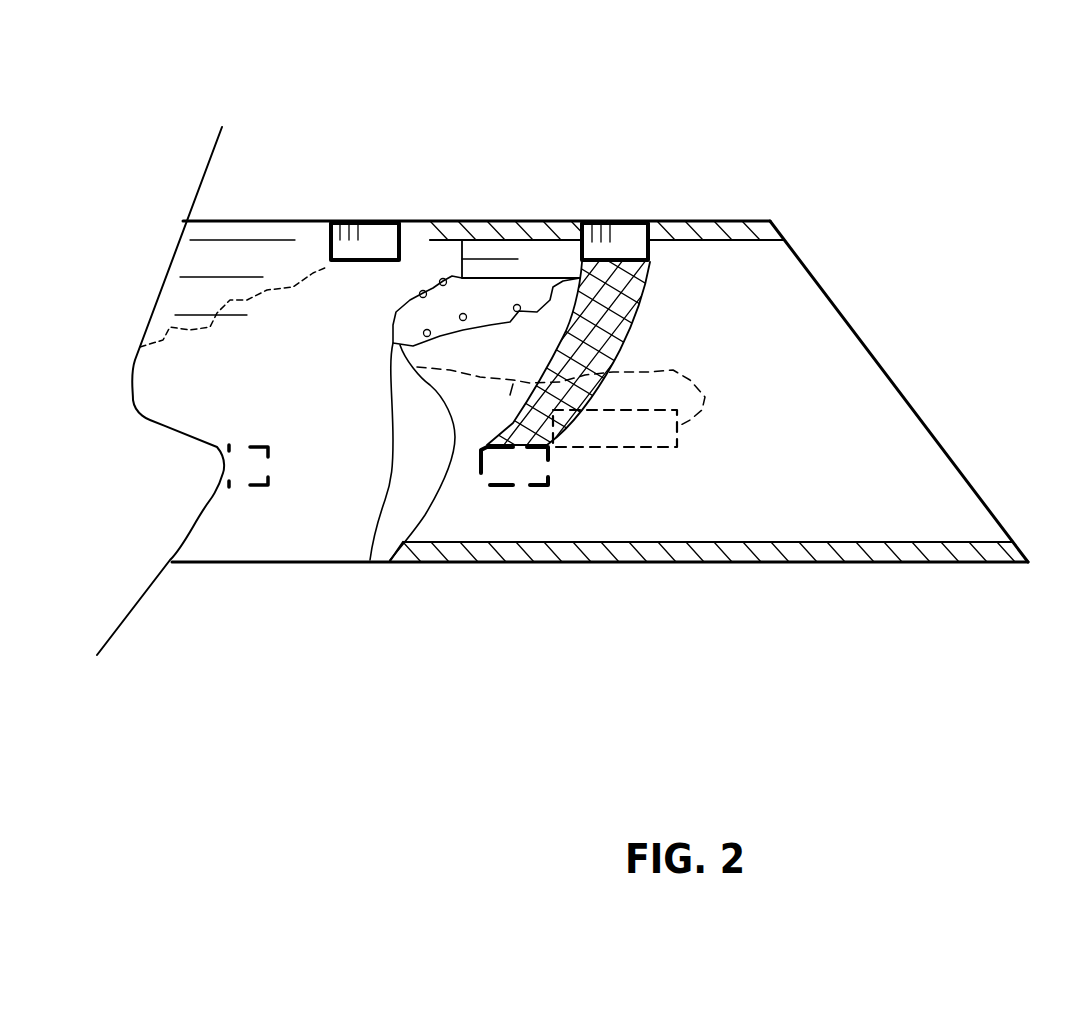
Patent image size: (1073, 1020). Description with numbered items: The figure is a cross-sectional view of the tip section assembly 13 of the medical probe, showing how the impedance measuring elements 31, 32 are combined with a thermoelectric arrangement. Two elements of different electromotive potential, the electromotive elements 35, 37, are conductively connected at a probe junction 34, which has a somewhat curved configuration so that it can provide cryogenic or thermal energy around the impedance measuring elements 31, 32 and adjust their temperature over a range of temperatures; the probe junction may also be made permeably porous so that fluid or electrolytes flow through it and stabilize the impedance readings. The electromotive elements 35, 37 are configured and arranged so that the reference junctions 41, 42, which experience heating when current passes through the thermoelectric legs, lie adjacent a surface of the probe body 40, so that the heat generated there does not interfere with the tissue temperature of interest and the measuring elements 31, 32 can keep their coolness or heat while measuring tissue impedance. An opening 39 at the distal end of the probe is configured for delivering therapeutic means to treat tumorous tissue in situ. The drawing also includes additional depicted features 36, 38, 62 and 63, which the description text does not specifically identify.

The tip section assembly 13 is at (481, 147).
The impedance measuring element 31 is at (630, 220).
The impedance measuring element 32 is at (352, 220).
The probe junction 34 is at (627, 338).
The electromotive element 35 is at (530, 260).
The fibrous mass 36 is at (435, 277).
The electromotive element 37 is at (603, 448).
The boundary 38 is at (702, 410).
The opening 39 is at (863, 392).
The probe body 40 is at (870, 563).
The reference junction 41 is at (527, 487).
The reference junction 42 is at (248, 483).
The fiber loop 62 is at (463, 319).
The boundary line 63 is at (247, 300).